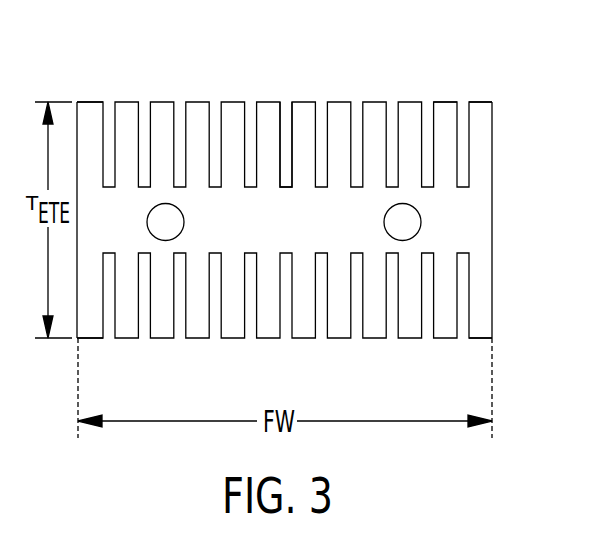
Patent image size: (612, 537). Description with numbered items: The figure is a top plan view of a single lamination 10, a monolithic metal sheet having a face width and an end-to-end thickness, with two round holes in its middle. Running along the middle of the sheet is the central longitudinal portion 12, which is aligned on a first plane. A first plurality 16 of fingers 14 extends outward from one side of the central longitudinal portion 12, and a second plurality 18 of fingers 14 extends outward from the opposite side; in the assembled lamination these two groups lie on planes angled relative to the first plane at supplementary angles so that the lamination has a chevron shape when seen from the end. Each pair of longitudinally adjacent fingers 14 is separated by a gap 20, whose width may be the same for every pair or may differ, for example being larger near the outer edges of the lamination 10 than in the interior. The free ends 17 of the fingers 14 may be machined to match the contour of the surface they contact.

The lamination 10 is at (329, 208).
The central longitudinal portion 12 is at (242, 213).
The fingers 14 is at (128, 115).
The first plurality of fingers 16 is at (519, 129).
The free ends 17 is at (445, 98).
The second plurality of fingers 18 is at (519, 307).
The gap 20 is at (288, 86).